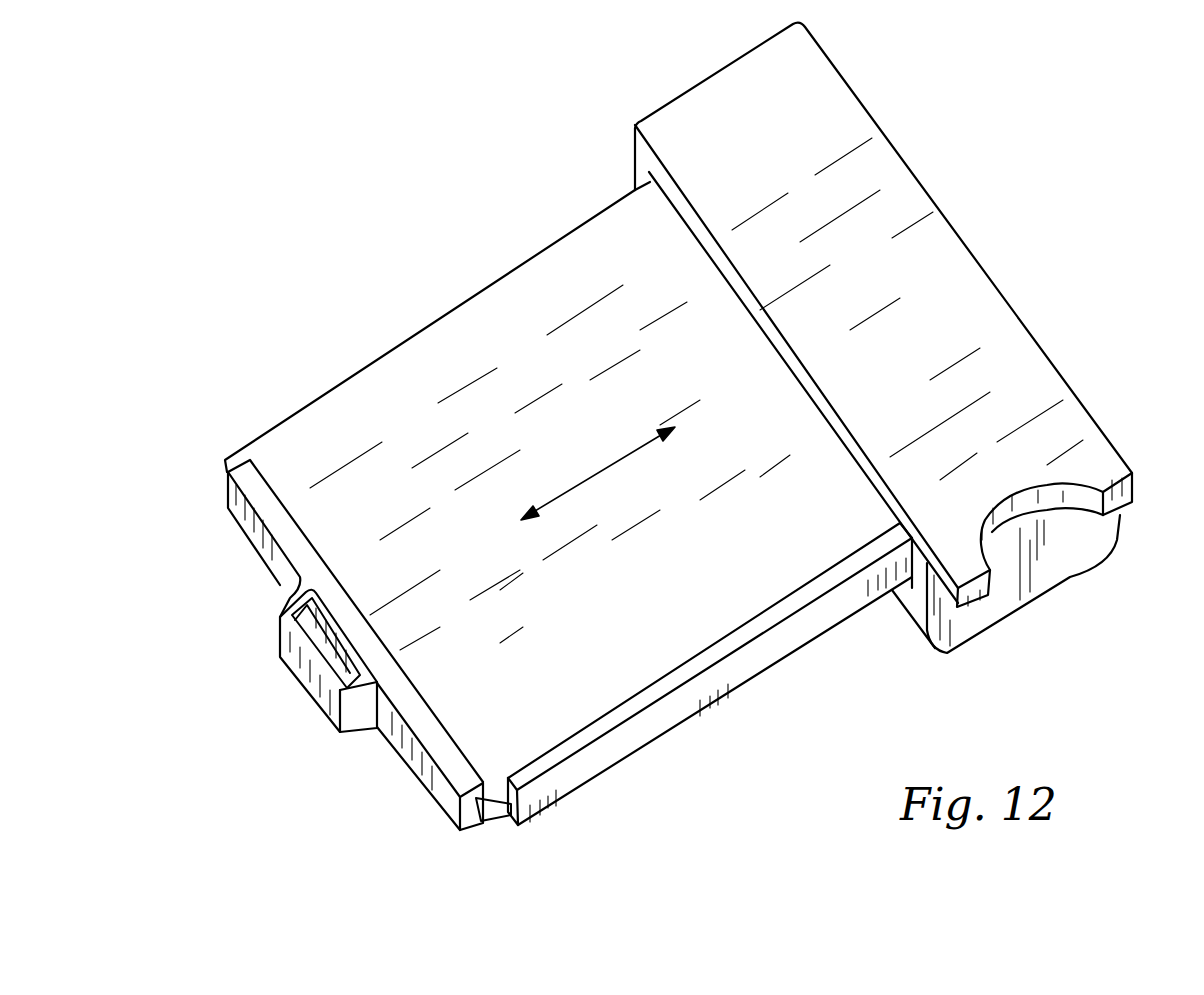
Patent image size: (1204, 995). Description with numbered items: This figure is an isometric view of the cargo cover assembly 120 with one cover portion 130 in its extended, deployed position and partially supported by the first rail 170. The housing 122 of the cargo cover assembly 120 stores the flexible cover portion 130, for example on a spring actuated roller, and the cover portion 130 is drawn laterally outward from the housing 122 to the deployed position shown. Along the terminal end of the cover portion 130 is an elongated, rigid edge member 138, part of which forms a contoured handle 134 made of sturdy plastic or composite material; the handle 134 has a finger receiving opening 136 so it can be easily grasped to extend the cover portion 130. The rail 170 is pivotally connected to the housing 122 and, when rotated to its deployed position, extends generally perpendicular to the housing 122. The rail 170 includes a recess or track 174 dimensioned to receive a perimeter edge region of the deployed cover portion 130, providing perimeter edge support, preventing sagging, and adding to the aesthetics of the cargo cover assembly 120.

The cargo cover assembly 120 is at (438, 247).
The housing 122 is at (1045, 573).
The first cover portion 130 is at (394, 413).
The handle 134 is at (310, 688).
The finger receiving opening 136 is at (337, 646).
The edge member 138 is at (407, 758).
The rail 170 is at (682, 703).
The track 174 is at (510, 813).